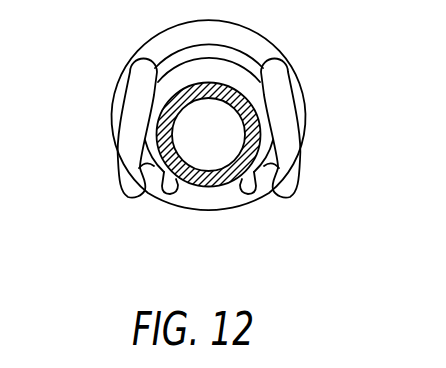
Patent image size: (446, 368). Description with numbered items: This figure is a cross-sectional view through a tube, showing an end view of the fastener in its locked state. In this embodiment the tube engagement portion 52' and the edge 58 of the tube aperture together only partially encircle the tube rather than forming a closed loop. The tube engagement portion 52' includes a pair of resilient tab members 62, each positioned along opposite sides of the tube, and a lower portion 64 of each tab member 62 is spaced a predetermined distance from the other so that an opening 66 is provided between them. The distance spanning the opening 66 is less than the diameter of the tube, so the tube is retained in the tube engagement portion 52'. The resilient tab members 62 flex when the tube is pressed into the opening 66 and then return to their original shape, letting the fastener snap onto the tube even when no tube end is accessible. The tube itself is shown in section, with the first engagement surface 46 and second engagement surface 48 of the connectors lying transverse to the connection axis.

The edge of the tube aperture 58 is at (241, 38).
The tube engagement portion 52' is at (256, 115).
The resilient tab member 62 is at (277, 153).
The lower portion 64 is at (170, 197).
The opening 66 is at (152, 170).
The first engagement surface 46 is at (206, 190).
The second engagement surface 48 is at (239, 193).